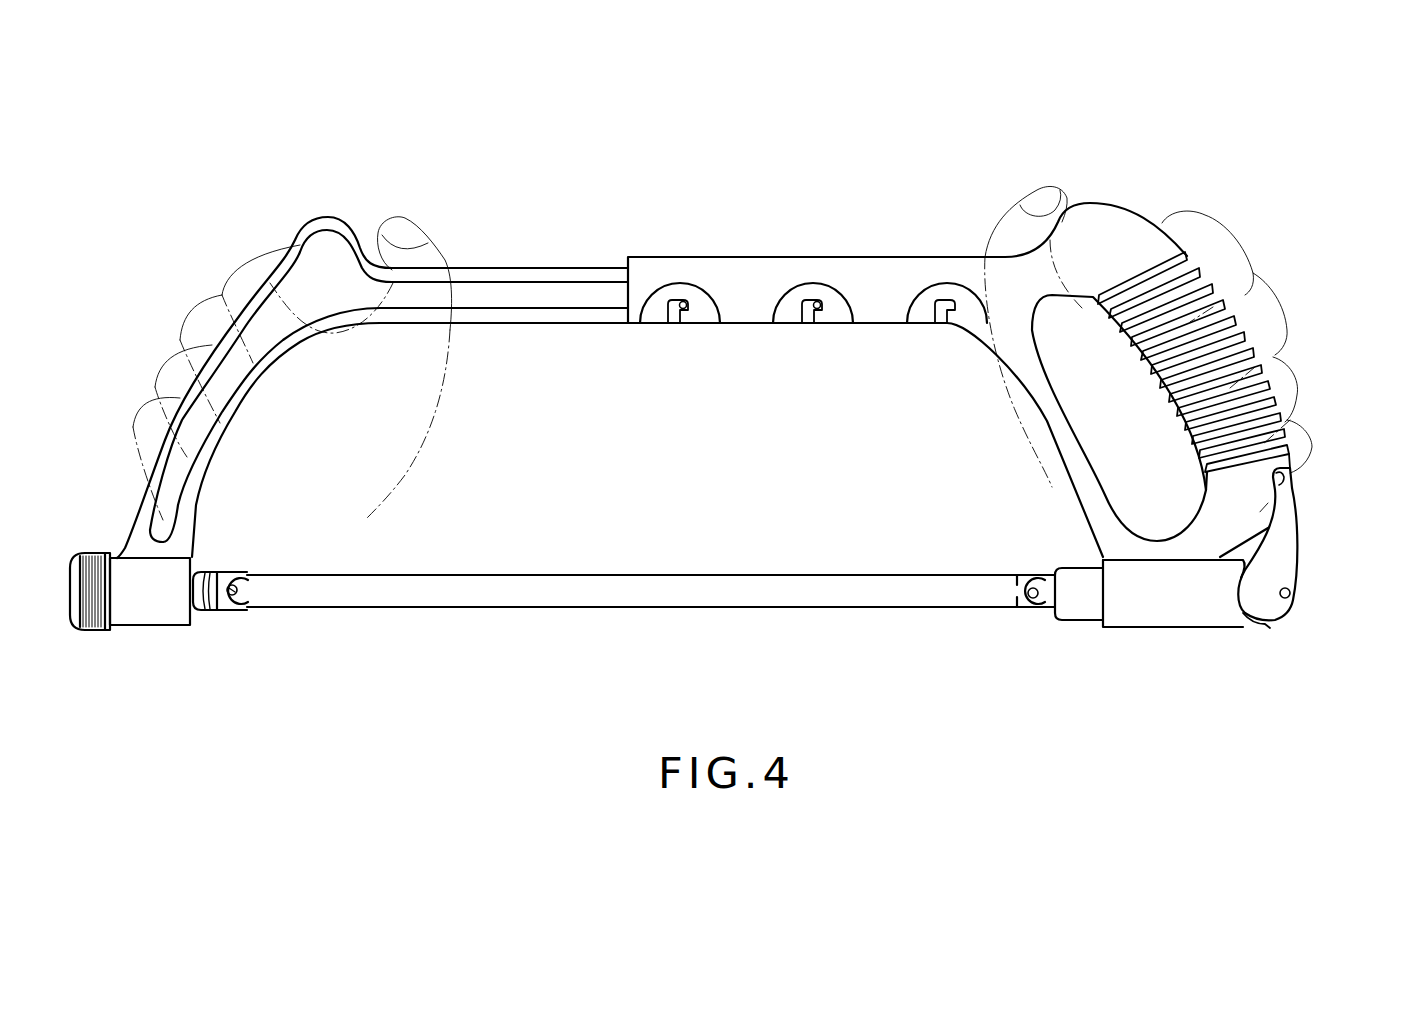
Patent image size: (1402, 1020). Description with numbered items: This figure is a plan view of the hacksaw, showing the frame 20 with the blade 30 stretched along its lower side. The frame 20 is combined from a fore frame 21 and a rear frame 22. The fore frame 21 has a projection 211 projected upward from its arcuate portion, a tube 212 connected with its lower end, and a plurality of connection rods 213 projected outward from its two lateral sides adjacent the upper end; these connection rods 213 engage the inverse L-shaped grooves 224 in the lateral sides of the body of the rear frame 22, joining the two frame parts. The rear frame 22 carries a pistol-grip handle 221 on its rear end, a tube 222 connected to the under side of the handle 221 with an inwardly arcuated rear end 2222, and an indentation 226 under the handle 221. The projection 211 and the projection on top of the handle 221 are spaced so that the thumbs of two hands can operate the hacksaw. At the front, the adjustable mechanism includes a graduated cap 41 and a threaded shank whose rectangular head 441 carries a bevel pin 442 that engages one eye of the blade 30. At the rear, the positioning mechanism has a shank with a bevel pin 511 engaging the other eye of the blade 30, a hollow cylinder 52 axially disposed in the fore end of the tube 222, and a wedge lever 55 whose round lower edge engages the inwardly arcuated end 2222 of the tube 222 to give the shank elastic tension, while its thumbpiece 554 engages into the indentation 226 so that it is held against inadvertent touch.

The frame 20 is at (665, 237).
The fore frame 21 is at (513, 280).
The projection 211 is at (330, 243).
The tube 212 is at (145, 593).
The connection rods 213 is at (688, 307).
The rear frame 22 is at (738, 275).
The pistol-grip handle 221 is at (1230, 290).
The tube 222 is at (1187, 617).
The inwardly arcuated rear end 2222 is at (1267, 627).
The inverse L-shaped grooves 224 is at (673, 320).
The indentation 226 is at (1292, 450).
The blade 30 is at (657, 590).
The graduated cap 41 is at (97, 607).
The rectangular head 441 is at (202, 607).
The bevel pin 442 is at (233, 593).
The bevel pin 511 is at (1033, 597).
The hollow cylinder 52 is at (1072, 610).
The wedge lever 55 is at (1273, 558).
The thumbpiece 554 is at (1283, 493).